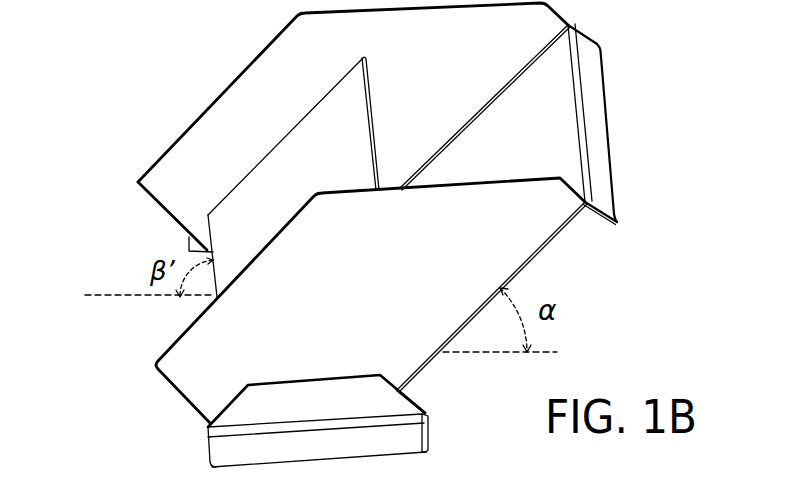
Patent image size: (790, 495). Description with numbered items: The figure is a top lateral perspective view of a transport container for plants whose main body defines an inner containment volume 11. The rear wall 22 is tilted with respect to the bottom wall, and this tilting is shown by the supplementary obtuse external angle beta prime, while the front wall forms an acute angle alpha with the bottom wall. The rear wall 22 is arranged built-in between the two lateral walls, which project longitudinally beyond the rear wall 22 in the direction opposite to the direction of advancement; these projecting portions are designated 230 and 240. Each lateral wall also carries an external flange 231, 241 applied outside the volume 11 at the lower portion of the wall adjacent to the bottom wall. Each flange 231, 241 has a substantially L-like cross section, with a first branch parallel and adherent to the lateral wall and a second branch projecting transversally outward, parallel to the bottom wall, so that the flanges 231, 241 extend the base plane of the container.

The inner containment volume 11 is at (448, 132).
The rear wall 22 is at (278, 178).
The projecting portion of first lateral wall 230 is at (333, 291).
The external flange 231 is at (203, 444).
The projecting portion of second lateral wall 240 is at (294, 107).
The external flange 241 is at (186, 241).